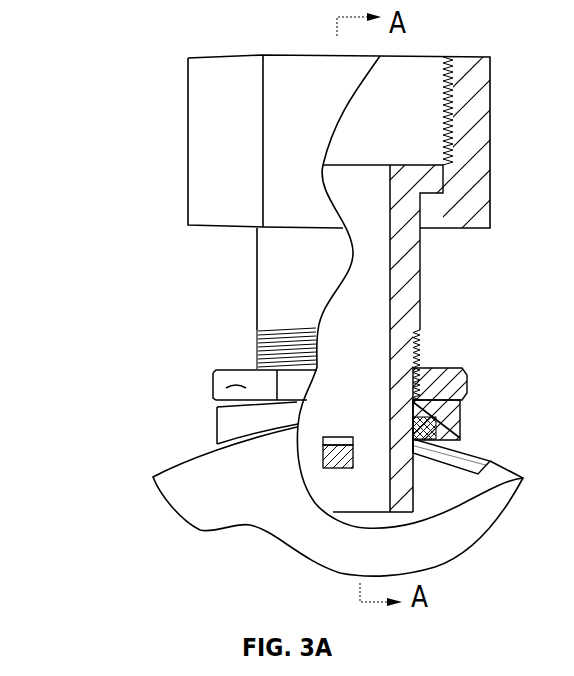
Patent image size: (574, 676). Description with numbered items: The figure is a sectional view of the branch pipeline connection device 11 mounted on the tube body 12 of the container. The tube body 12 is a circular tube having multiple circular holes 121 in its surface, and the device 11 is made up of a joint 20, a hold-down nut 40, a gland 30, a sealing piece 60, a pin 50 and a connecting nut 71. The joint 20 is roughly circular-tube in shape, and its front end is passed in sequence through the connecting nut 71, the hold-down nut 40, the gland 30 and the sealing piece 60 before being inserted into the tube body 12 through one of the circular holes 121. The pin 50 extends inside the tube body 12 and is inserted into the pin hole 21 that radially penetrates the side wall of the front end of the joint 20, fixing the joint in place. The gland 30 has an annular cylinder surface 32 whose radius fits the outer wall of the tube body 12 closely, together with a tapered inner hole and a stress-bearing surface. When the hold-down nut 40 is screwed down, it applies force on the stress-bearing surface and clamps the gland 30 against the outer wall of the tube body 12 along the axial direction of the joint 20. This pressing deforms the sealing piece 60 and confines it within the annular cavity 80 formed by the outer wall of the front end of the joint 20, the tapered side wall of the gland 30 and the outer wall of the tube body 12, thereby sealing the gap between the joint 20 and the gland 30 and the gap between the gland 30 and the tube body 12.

The branch pipeline connection device 11 is at (125, 99).
The connecting nut 71 is at (208, 176).
The joint 20 is at (285, 292).
The hold-down nut 40 is at (213, 393).
The gland 30 is at (238, 423).
The tube body 12 is at (212, 499).
The annular cavity 80 is at (413, 414).
The sealing piece 60 is at (436, 422).
The annular cylinder surface 32 is at (472, 454).
The pin hole 21 is at (335, 435).
The pin 50 is at (340, 465).
The circular holes 121 is at (405, 447).